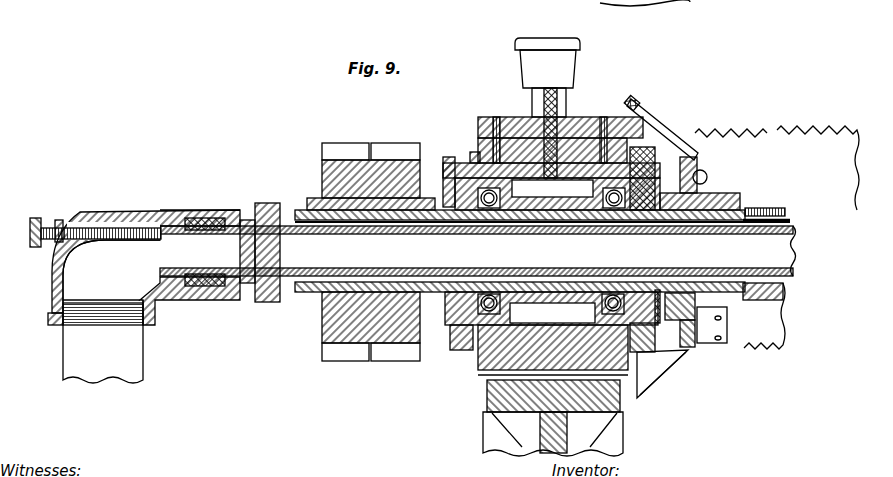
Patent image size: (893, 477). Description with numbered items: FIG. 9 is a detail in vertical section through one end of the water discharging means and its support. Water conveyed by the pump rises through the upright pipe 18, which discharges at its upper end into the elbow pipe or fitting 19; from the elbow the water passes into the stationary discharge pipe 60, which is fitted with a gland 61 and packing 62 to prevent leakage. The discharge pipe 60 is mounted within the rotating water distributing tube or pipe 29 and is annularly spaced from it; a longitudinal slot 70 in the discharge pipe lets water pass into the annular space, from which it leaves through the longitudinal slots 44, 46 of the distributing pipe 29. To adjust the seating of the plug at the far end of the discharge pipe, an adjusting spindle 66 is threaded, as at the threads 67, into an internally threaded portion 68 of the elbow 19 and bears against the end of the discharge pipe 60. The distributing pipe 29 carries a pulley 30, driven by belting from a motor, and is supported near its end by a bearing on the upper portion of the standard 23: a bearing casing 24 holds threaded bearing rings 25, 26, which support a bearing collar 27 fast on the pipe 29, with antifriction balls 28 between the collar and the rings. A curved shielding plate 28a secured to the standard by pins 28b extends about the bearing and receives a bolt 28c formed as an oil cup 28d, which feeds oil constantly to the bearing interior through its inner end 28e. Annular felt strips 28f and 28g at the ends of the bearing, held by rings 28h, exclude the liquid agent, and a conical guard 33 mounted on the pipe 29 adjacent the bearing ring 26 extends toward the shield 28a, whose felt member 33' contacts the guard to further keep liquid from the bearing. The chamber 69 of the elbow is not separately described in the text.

The upright pipe 18 is at (68, 359).
The elbow pipe or fitting 19 is at (125, 215).
The standard 23 is at (487, 371).
The bearing casing 24 is at (577, 333).
The bearing ring 25 is at (455, 350).
The bearing ring 26 is at (660, 325).
The bearing collar 27 is at (556, 296).
The antifriction balls 28 is at (489, 206).
The curved shielding plate 28a is at (602, 117).
The pins 28b is at (496, 117).
The bolt 28c is at (565, 100).
The oil cup 28d is at (541, 55).
The inner end of bolt 28e is at (557, 194).
The annular felt strip 28f is at (474, 160).
The annular felt strip 28g is at (662, 156).
The rings 28h is at (445, 195).
The water distributing tube or pipe 29 is at (303, 292).
The pulley 30 is at (322, 179).
The guard 33 is at (662, 129).
The felt member 33' is at (652, 96).
The longitudinal slot 44 is at (748, 206).
The longitudinal slot 46 is at (768, 292).
The discharge pipe 60 is at (192, 210).
The gland 61 is at (266, 203).
The packing 62 is at (215, 218).
The adjusting spindle 66 is at (150, 230).
The threads of adjusting spindle 67 is at (78, 215).
The internally threaded portion 68 is at (97, 222).
The chamber 69 is at (158, 256).
The longitudinal slot 70 is at (766, 227).